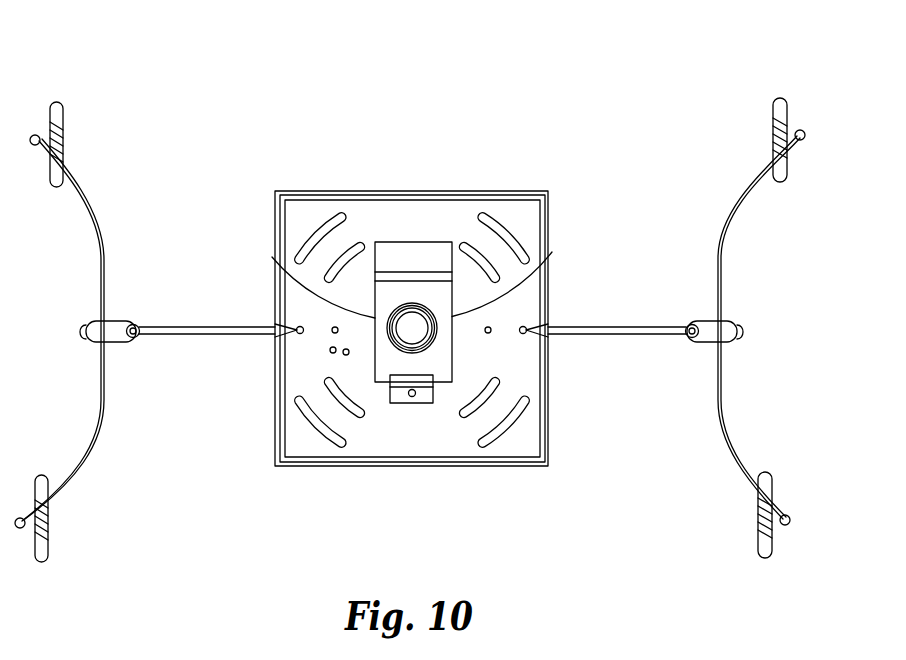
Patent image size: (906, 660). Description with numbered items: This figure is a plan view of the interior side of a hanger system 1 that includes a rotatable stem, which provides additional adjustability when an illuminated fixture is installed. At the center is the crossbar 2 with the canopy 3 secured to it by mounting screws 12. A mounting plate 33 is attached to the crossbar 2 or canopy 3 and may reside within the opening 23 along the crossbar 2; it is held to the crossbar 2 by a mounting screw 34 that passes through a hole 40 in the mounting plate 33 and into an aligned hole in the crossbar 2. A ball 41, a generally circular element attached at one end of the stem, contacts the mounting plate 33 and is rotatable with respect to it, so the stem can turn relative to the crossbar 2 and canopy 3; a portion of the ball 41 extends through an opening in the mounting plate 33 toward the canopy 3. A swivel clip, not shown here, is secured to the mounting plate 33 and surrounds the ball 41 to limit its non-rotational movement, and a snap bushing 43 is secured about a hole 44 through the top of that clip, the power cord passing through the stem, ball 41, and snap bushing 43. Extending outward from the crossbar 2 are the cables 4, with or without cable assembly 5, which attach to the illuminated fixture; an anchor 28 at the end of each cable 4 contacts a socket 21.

The hanger system 1 is at (252, 95).
The crossbar 2 is at (362, 215).
The canopy 3 is at (483, 191).
The cable 4 is at (186, 329).
The cable assembly 5 is at (100, 113).
The mounting screw 12 is at (333, 333).
The socket 21 is at (297, 328).
The opening 23 is at (550, 248).
The anchor 28 is at (297, 332).
The mounting plate 33 is at (392, 355).
The mounting screw 34 is at (417, 400).
The hole 40 is at (410, 398).
The ball 41 is at (418, 322).
The snap bushing 43 is at (408, 303).
The hole 44 is at (272, 258).